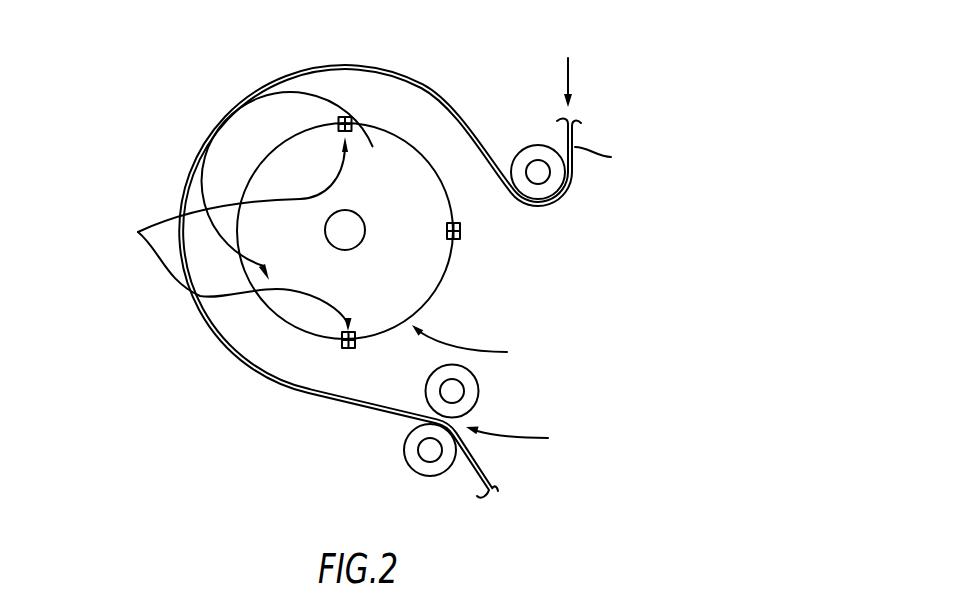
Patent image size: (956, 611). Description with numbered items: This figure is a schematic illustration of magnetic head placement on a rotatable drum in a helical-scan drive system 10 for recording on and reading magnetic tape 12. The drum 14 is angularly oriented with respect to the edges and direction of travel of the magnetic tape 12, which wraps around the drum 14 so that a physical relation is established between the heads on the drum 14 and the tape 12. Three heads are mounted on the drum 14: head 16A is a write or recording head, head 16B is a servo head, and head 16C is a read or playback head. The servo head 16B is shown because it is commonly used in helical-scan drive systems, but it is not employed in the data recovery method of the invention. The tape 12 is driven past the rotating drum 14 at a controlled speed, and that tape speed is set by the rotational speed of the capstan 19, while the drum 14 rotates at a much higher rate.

The helical-scan drive system 10 is at (652, 307).
The magnetic tape 12 is at (297, 71).
The drum 14 is at (427, 302).
The write head 16A is at (349, 349).
The servo head 16B is at (460, 231).
The read head 16C is at (352, 118).
The capstan 19 is at (480, 387).